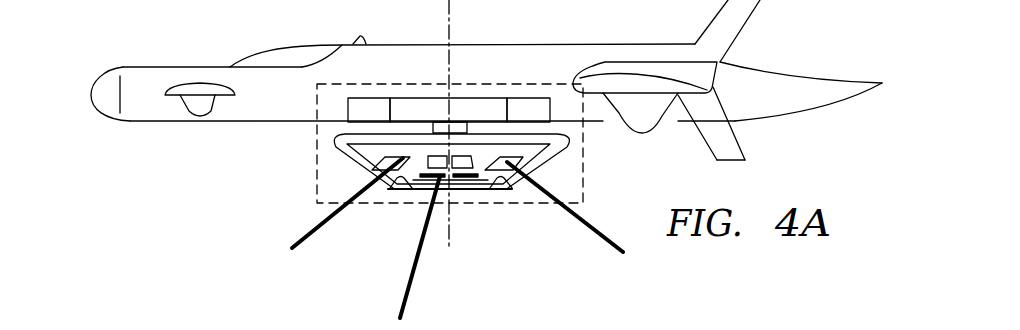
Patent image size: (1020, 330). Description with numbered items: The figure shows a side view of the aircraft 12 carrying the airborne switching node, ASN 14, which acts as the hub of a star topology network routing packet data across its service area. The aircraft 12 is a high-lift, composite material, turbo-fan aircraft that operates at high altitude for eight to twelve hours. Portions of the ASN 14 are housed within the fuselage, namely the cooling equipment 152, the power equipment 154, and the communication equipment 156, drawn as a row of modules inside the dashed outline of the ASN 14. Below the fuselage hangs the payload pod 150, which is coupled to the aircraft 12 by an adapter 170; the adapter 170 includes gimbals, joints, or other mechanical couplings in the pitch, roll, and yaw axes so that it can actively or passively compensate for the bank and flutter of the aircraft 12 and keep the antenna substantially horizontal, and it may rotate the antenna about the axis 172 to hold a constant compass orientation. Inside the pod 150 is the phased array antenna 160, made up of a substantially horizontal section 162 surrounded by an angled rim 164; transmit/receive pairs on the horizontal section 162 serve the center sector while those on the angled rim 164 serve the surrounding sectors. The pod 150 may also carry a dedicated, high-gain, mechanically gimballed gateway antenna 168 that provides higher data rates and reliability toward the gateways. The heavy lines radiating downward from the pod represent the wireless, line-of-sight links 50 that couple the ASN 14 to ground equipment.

The aircraft 12 is at (230, 120).
The ASN 14 is at (583, 177).
The links 50 is at (313, 240).
The payload pod 150 is at (556, 161).
The cooling equipment 152 is at (370, 100).
The power equipment 154 is at (528, 100).
The communication equipment 156 is at (428, 100).
The phased array antenna 160 is at (472, 187).
The horizontal section 162 is at (418, 187).
The angled rim 164 is at (352, 164).
The gateway antenna 168 is at (385, 192).
The adapter 170 is at (468, 128).
The axis 172 is at (447, 22).